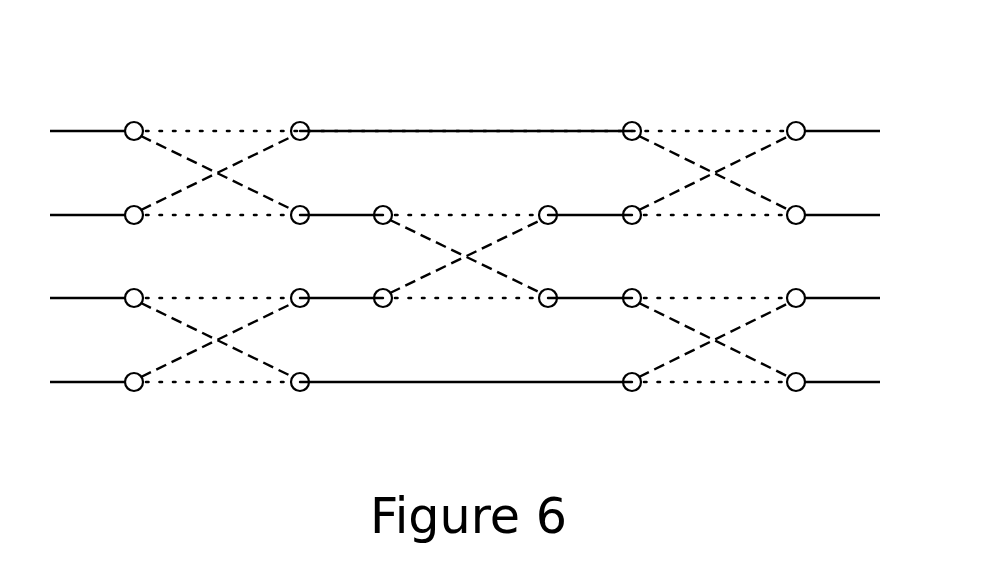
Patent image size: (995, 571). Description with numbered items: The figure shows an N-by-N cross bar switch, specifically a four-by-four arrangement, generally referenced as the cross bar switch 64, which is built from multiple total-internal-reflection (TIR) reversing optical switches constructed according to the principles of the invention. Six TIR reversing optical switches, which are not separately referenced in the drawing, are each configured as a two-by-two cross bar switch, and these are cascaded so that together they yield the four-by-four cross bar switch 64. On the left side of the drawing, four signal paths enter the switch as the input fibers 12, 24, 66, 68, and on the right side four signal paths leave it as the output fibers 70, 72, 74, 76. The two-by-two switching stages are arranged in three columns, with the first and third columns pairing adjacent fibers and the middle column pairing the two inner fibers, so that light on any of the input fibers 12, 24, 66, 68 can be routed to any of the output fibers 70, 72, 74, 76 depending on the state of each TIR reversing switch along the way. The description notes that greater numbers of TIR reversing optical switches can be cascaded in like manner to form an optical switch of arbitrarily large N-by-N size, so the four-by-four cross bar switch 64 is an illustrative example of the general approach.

The 4×4 cross bar switch 64 is at (822, 46).
The input fiber 12 is at (90, 124).
The input fiber 24 is at (92, 208).
The input fiber 66 is at (88, 292).
The input fiber 68 is at (92, 376).
The output fiber 70 is at (836, 124).
The output fiber 72 is at (840, 210).
The output fiber 74 is at (840, 294).
The output fiber 76 is at (838, 377).